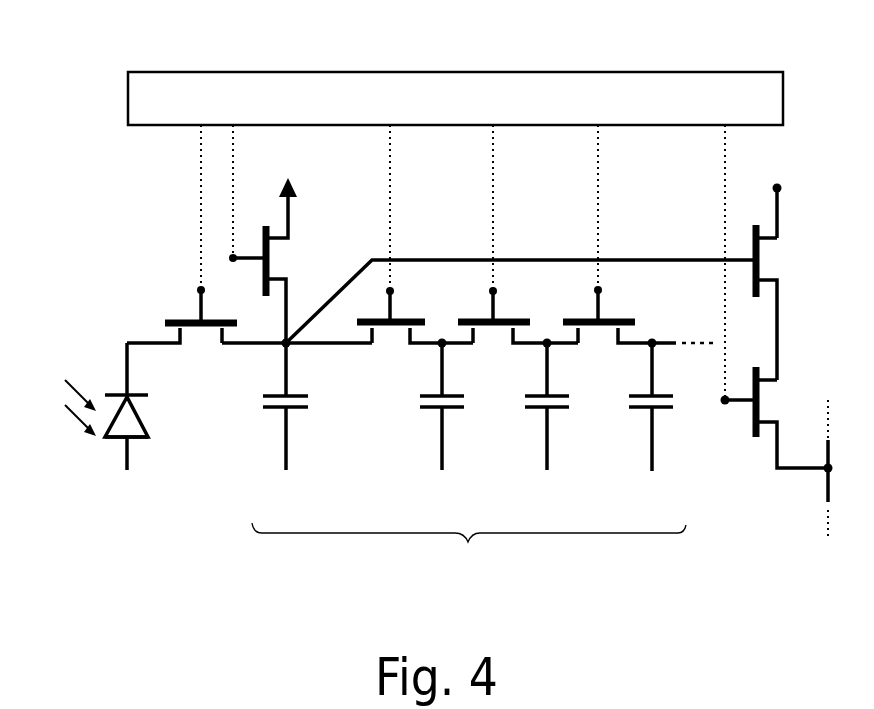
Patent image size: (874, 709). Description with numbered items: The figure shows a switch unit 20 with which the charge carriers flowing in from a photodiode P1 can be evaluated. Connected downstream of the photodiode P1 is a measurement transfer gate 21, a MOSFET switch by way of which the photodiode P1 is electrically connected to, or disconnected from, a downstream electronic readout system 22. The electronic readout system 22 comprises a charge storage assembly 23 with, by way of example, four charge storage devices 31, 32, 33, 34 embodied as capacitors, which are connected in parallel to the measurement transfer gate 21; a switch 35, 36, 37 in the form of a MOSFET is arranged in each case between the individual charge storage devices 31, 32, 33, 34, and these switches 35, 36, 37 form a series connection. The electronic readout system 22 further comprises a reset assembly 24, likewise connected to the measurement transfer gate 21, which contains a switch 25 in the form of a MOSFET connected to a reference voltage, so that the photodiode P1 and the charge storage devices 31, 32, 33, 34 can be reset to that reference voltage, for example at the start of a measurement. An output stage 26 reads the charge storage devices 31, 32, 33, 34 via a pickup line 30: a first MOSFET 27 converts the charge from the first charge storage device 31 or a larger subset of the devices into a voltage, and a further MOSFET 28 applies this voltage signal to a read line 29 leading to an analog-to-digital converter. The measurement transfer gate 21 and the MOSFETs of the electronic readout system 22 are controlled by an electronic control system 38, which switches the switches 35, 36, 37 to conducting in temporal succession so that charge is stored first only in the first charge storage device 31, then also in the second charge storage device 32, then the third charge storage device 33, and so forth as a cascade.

The switch unit 20 is at (80, 145).
The measurement transfer gate 21 is at (183, 317).
The electronic readout system 22 is at (238, 375).
The charge storage assembly 23 is at (469, 552).
The reset assembly 24 is at (296, 258).
The switch 25 is at (256, 243).
The output stage 26 is at (793, 200).
The first MOSFET 27 is at (762, 250).
The further MOSFET 28 is at (752, 416).
The read line 29 is at (825, 488).
The pickup line 30 is at (670, 258).
The first charge storage device 31 is at (268, 404).
The second charge storage device 32 is at (430, 409).
The third charge storage device 33 is at (535, 409).
The fourth charge storage device 34 is at (640, 409).
The switch 35 is at (398, 316).
The switch 36 is at (502, 316).
The switch 37 is at (612, 316).
The electronic control system 38 is at (455, 105).
The photodiode P1 is at (116, 432).